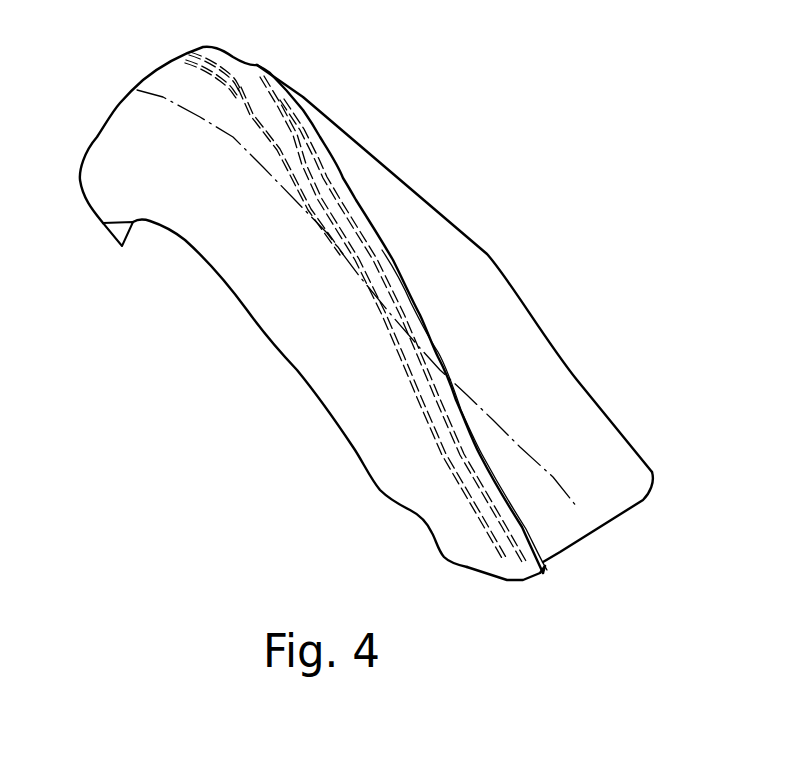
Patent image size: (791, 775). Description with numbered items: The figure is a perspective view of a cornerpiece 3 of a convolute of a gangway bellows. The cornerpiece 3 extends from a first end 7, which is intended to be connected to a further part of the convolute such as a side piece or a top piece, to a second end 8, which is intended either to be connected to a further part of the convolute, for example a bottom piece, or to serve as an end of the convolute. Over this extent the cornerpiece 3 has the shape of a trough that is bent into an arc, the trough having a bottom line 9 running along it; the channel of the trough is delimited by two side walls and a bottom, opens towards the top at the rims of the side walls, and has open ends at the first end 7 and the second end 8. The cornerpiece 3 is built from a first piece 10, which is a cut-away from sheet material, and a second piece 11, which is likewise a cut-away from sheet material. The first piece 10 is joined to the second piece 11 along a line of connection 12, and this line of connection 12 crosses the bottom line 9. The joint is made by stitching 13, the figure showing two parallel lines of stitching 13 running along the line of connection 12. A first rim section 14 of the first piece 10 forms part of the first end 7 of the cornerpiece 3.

The cornerpiece 3 is at (410, 233).
The first end 7 is at (574, 554).
The second end 8 is at (132, 240).
The bottom line 9 is at (579, 509).
The first piece 10 is at (287, 332).
The second piece 11 is at (503, 313).
The line of connection 12 is at (527, 563).
The stitching 13 is at (243, 90).
The first rim section 14 is at (513, 580).